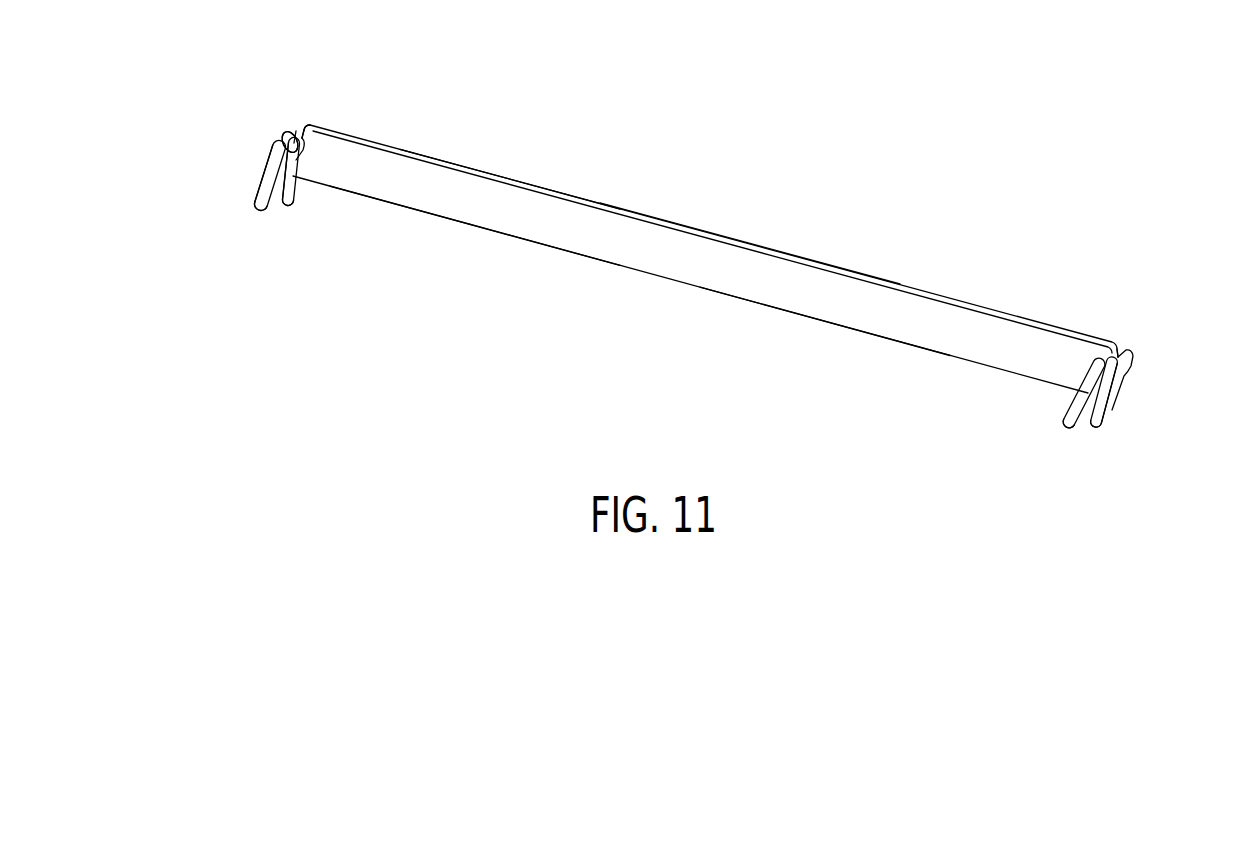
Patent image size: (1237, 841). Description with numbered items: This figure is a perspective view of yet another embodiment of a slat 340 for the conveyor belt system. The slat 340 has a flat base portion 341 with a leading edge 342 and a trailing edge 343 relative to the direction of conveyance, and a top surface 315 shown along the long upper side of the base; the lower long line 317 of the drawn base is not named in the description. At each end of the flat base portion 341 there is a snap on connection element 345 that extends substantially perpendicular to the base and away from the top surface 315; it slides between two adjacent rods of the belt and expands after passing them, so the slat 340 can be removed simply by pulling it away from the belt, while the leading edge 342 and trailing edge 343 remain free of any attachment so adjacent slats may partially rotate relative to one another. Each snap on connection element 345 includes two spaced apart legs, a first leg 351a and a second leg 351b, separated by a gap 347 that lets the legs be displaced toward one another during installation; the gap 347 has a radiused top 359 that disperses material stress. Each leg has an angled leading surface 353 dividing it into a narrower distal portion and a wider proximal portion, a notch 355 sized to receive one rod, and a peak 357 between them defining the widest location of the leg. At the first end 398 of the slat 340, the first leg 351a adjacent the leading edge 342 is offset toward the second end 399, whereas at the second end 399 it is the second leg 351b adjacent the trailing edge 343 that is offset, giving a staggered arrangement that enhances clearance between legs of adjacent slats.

The slat 340 is at (925, 182).
The top surface 315 is at (770, 246).
The lower rail 317 is at (822, 310).
The flat base portion 341 is at (523, 236).
The leading edge 342 is at (536, 184).
The trailing edge 343 is at (412, 210).
The snap on connection element 345 is at (238, 103).
The gap 347 is at (273, 230).
The first leg 351a is at (283, 158).
The second leg 351b is at (267, 210).
The angled leading surface 353 is at (268, 188).
The notch 355 is at (295, 129).
The peak 357 is at (288, 131).
The radiused top 359 is at (312, 124).
The first end 398 is at (198, 138).
The second end 399 is at (1160, 358).